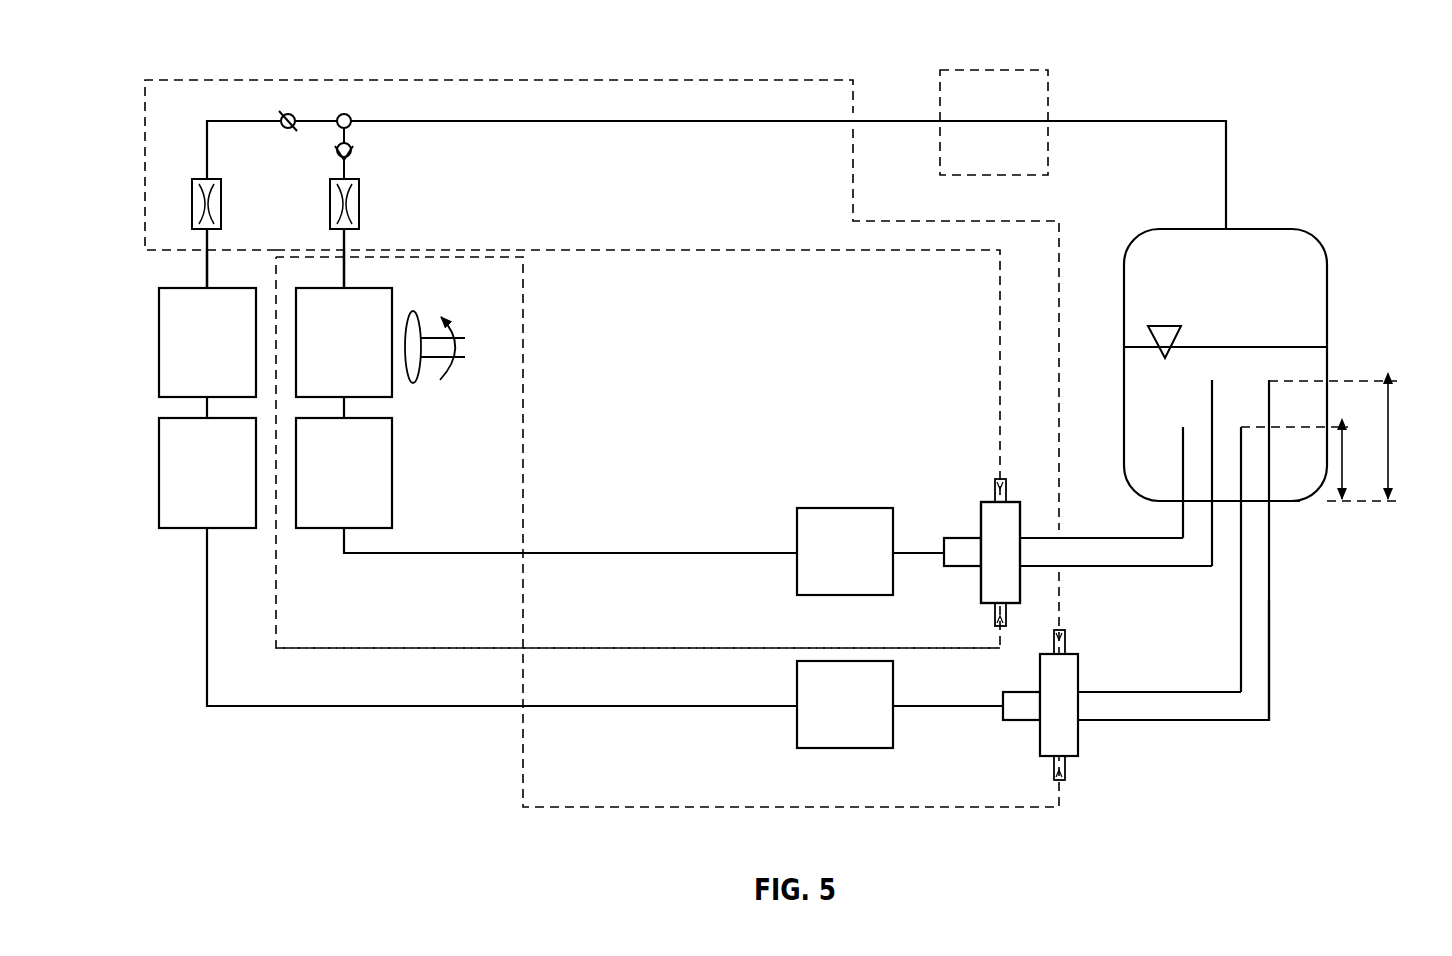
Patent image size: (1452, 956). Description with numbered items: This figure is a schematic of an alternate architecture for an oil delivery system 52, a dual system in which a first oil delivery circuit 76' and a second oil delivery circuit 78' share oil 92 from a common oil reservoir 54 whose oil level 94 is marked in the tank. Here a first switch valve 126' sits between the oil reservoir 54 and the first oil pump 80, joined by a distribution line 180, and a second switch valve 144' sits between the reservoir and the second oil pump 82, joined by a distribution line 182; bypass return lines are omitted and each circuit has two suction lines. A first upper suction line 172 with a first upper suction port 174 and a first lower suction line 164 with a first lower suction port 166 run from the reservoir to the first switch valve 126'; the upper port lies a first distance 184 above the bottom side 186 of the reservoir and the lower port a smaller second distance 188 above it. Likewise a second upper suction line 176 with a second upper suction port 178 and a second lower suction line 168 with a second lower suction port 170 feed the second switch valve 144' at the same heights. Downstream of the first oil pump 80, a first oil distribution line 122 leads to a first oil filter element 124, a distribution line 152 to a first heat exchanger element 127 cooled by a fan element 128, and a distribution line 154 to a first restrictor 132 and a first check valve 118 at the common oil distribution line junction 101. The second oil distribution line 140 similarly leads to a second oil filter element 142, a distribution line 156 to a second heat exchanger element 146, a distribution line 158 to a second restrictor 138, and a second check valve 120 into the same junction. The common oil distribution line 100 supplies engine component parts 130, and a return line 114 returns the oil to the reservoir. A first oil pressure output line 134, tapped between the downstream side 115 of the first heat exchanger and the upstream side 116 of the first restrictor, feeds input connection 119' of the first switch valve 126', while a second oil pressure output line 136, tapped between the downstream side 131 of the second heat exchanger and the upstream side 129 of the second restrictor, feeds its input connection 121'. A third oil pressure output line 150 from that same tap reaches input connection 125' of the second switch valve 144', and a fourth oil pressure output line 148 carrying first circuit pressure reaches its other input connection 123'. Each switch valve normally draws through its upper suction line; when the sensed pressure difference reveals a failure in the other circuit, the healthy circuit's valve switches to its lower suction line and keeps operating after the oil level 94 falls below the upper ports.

The oil delivery system 52 is at (1291, 31).
The oil reservoir 54 is at (1328, 276).
The first oil delivery circuit 76' is at (1029, 532).
The second oil delivery circuit 78' is at (1101, 718).
The first oil pump 80 is at (845, 508).
The second oil pump 82 is at (850, 748).
The oil 92 is at (1135, 363).
The oil level 94 is at (1196, 343).
The common oil distribution line 100 is at (730, 121).
The common oil distribution line junction 101 is at (342, 113).
The return line 114 is at (1160, 121).
The downstream side of the first heat exchanger element 115 is at (339, 281).
The upstream side of the first restrictor 116 is at (335, 240).
The first check valve 118 is at (352, 151).
The input connection 119' is at (973, 467).
The second check valve 120 is at (286, 113).
The input connection 121' is at (957, 626).
The first oil distribution line 122 is at (597, 553).
The second valve port 123' is at (1014, 781).
The first oil filter element 124 is at (392, 481).
The input connection 125' is at (1088, 618).
The first switch valve 126' is at (1044, 512).
The first heat exchanger element 127 is at (380, 290).
The fan element 128 is at (461, 327).
The upstream side of the second restrictor 129 is at (218, 240).
The engine component parts 130 is at (995, 70).
The downstream side of the second heat exchanger element 131 is at (200, 284).
The first restrictor 132 is at (359, 196).
The first oil pressure output line 134 is at (685, 250).
The second oil pressure output line 136 is at (633, 648).
The second restrictor 138 is at (192, 201).
The second oil distribution line 140 is at (372, 706).
The second oil filter element 142 is at (159, 491).
The second switch valve 144' is at (1173, 686).
The second heat exchanger element 146 is at (159, 341).
The fourth oil pressure output line 148 is at (590, 807).
The third oil pressure output line 150 is at (540, 80).
The distribution line 152 is at (344, 408).
The distribution line 154 is at (350, 279).
The distribution line 156 is at (207, 408).
The distribution line 158 is at (204, 258).
The first lower suction line 164 is at (1168, 537).
The first lower suction port 166 is at (1182, 421).
The second lower suction line 168 is at (1183, 691).
The second lower suction port 170 is at (1242, 418).
The first upper suction line 172 is at (1188, 568).
The first upper suction port 174 is at (1212, 375).
The second upper suction line 176 is at (1270, 626).
The second upper suction port 178 is at (1269, 375).
The distribution line 180 is at (920, 553).
The distribution line 182 is at (945, 706).
The first distance 184 is at (1390, 437).
The bottom side 186 is at (1281, 508).
The second distance 188 is at (1344, 464).